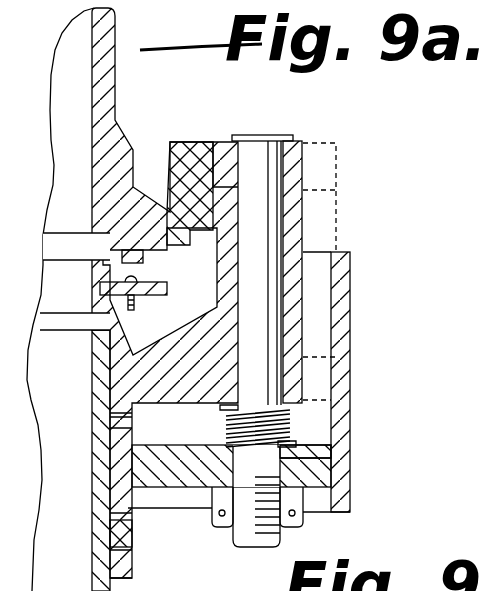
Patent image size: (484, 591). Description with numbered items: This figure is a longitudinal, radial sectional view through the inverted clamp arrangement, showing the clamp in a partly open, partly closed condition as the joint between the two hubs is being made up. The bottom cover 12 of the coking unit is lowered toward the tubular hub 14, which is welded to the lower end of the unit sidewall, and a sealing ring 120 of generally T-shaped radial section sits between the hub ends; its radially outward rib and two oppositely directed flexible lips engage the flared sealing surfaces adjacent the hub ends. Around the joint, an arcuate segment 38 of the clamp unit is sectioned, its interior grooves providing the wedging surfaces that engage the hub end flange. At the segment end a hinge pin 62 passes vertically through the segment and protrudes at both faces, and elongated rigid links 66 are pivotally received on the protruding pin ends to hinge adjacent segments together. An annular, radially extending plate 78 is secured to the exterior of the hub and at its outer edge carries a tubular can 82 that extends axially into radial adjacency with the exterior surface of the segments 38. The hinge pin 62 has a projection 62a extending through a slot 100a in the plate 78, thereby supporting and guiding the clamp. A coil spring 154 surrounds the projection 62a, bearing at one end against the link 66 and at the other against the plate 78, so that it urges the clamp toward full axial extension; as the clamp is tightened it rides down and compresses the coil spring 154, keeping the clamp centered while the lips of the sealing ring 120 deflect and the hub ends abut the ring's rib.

The bottom cover 12 is at (108, 97).
The arcuate segments 38 is at (197, 148).
The links 66 is at (303, 172).
The hinge pin 62 is at (281, 231).
The can 82 is at (340, 371).
The slot 100a is at (325, 447).
The plate 78 is at (332, 477).
The projection 62a is at (277, 537).
The coil spring 154 is at (230, 415).
The sealing ring 120 is at (69, 302).
The tubular hub 14 is at (145, 502).